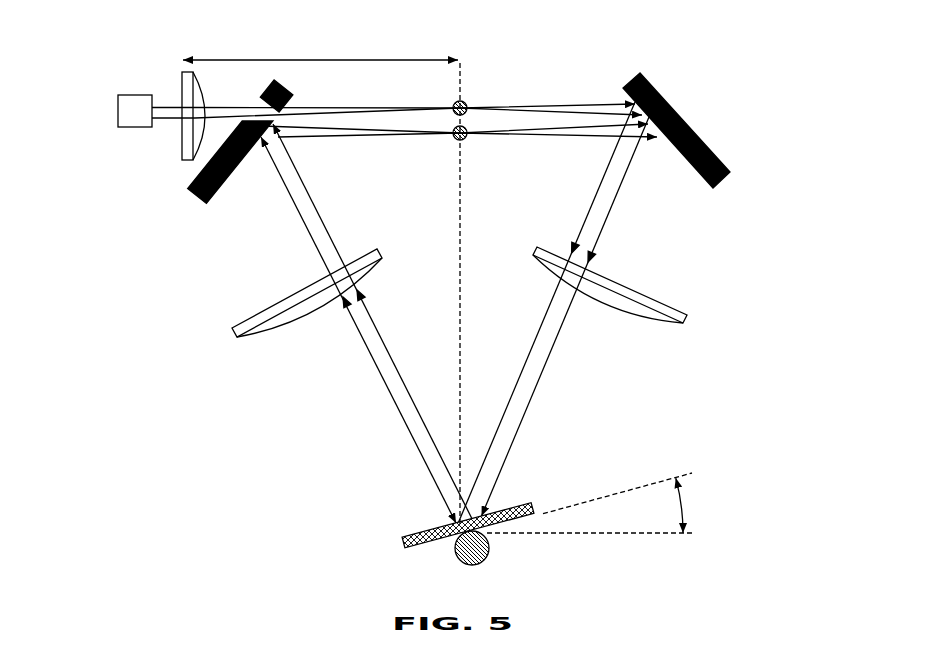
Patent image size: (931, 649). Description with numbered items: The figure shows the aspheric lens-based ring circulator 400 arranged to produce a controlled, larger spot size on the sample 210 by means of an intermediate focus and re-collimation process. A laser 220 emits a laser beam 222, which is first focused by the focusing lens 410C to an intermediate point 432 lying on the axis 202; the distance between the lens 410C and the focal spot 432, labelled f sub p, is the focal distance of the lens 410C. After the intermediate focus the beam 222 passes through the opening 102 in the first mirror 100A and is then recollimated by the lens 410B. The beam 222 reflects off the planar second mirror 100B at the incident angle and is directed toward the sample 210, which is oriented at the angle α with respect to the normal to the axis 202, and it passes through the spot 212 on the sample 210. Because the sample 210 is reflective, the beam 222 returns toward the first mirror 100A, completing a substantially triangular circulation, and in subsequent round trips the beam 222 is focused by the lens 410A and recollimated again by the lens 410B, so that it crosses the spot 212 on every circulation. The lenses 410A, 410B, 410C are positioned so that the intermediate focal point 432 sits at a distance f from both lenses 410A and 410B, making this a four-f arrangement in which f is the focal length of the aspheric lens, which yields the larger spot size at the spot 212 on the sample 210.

The circulator 400 is at (742, 63).
The laser 220 is at (131, 95).
The laser beam 222 is at (164, 100).
The opening 102 is at (248, 97).
The lens 410C is at (182, 142).
The first mirror 100A is at (196, 164).
The second mirror 100B is at (721, 156).
The axis 202 is at (461, 70).
The intermediate point 432 is at (466, 102).
The lens 410A is at (275, 334).
The lens 410B is at (634, 319).
The spot 212 is at (455, 522).
The sample 210 is at (420, 548).